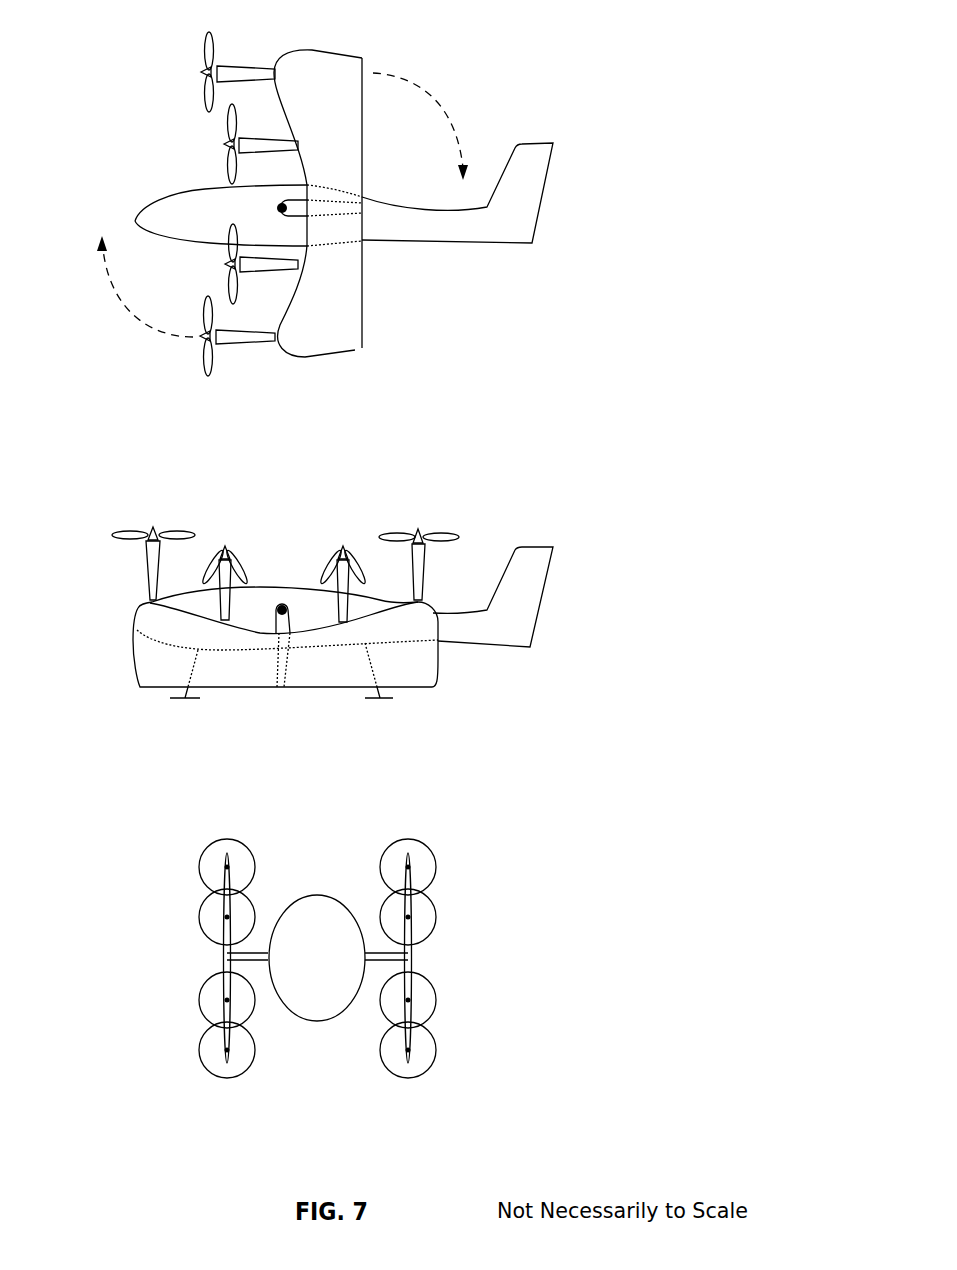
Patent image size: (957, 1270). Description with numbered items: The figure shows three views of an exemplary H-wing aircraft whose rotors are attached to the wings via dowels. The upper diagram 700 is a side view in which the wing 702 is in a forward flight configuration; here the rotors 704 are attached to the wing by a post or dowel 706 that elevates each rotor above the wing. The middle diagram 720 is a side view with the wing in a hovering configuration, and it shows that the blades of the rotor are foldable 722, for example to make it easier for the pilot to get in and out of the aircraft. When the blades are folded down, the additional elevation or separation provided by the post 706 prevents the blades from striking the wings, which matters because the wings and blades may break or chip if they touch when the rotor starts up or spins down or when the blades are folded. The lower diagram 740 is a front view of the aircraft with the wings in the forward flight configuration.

The diagram 700 is at (524, 40).
The wing 702 is at (355, 353).
The rotors 704 is at (207, 72).
The post or dowel 706 is at (245, 343).
The diagram 720 is at (524, 472).
The foldable blades 722 is at (233, 558).
The diagram 740 is at (468, 820).